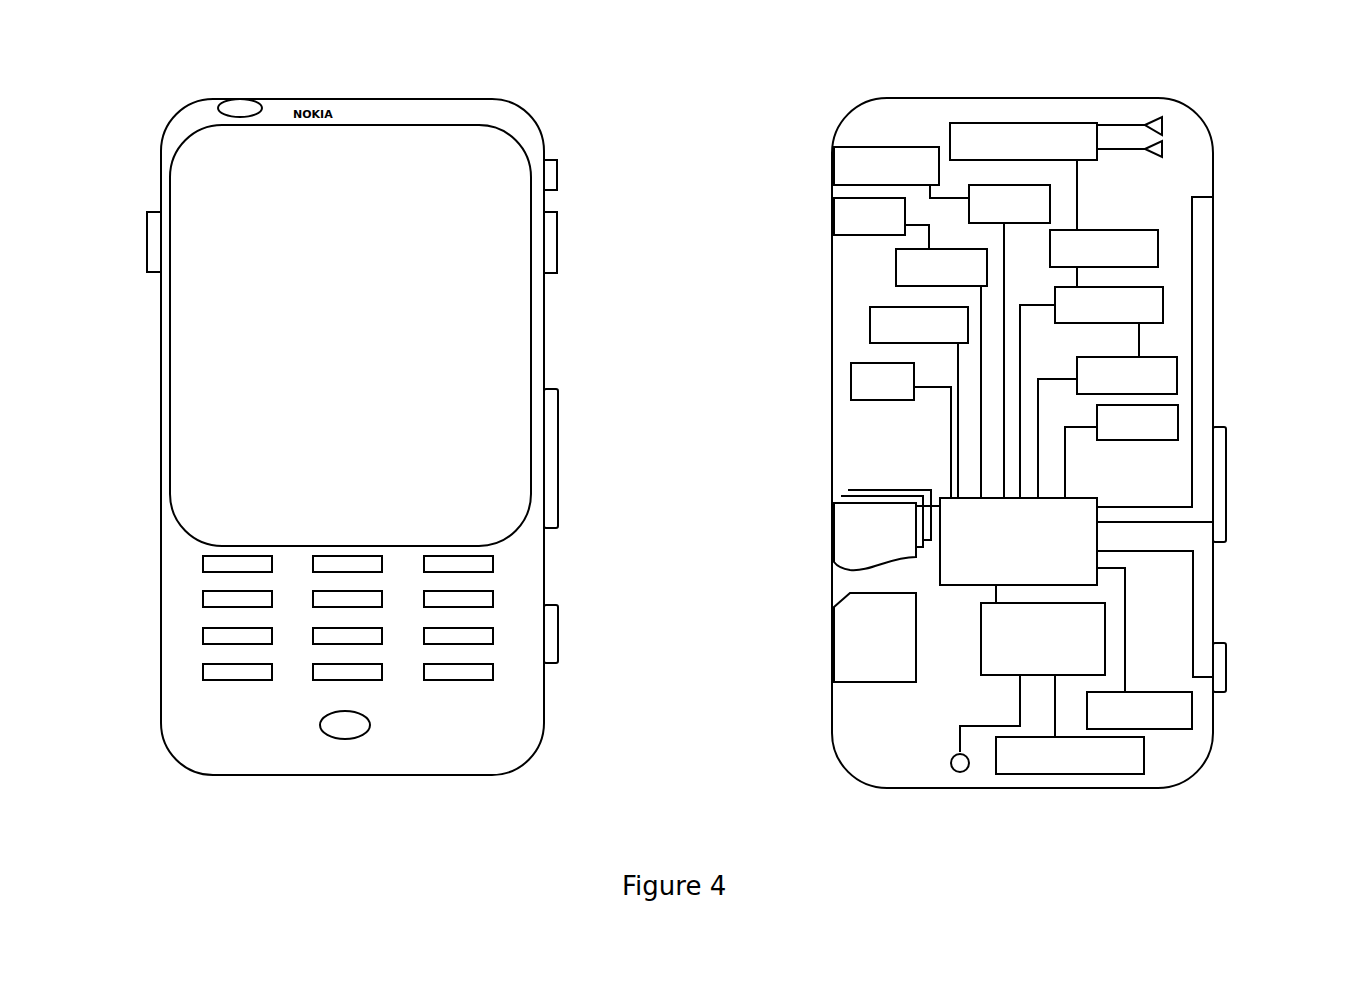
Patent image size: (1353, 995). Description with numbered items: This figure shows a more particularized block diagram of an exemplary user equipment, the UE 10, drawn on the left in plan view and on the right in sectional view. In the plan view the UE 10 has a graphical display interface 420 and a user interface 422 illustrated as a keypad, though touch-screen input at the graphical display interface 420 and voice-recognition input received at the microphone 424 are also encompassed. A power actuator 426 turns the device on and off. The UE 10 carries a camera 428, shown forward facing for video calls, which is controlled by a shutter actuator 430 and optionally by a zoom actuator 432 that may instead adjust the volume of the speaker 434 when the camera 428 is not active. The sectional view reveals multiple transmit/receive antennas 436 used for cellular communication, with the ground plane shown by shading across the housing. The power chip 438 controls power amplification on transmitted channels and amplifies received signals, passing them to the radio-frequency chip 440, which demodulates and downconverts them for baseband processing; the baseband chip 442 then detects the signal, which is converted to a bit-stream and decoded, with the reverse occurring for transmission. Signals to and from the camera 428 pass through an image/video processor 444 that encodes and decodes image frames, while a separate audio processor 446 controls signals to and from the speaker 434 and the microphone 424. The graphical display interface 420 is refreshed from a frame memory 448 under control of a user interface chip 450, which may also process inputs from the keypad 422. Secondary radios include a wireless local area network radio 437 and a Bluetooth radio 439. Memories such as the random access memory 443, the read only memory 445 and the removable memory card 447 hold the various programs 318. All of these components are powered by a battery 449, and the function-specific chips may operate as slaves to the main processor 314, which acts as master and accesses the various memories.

The user equipment 10 is at (138, 133).
The main processor 314 is at (948, 498).
The programs 318 is at (845, 545).
The graphical display interface 420 is at (240, 315).
The user interface 422 is at (167, 600).
The microphone 424 is at (338, 733).
The power actuator 426 is at (558, 172).
The camera 428 is at (238, 97).
The shutter actuator 430 is at (558, 620).
The zoom actuator 432 is at (558, 413).
The speaker 434 is at (145, 205).
The transmit/receive antennas 436 is at (1158, 117).
The wireless local area network radio 437 is at (870, 325).
The power chip 438 is at (996, 123).
The Bluetooth radio 439 is at (851, 388).
The radio-frequency chip 440 is at (1158, 237).
The baseband chip 442 is at (1162, 297).
The random access memory 443 is at (1177, 368).
The image/video processor 444 is at (1052, 223).
The read only memory 445 is at (1178, 415).
The audio processor 446 is at (896, 270).
The memory card 447 is at (850, 617).
The frame memory 448 is at (1065, 774).
The battery 449 is at (1177, 729).
The user interface chip 450 is at (981, 638).